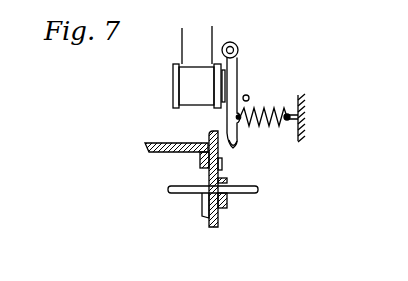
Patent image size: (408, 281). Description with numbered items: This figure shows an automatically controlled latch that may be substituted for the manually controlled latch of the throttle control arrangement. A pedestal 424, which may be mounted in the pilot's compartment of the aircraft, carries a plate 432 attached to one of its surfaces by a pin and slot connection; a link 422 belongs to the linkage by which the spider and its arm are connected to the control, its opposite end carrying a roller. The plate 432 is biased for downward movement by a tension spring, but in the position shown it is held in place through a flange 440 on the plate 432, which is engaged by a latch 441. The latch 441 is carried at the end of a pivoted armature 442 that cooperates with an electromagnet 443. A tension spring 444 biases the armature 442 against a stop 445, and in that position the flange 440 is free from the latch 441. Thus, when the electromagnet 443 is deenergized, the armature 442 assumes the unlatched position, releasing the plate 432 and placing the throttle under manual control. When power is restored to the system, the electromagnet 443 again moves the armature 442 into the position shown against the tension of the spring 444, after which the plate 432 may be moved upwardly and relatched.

The link 422 is at (257, 191).
The pedestal 424 is at (163, 152).
The plate 432 is at (217, 224).
The flange 440 is at (222, 128).
The latch 441 is at (238, 146).
The pivoted armature 442 is at (237, 65).
The electromagnet 443 is at (172, 90).
The tension spring 444 is at (275, 123).
The stop 445 is at (249, 96).